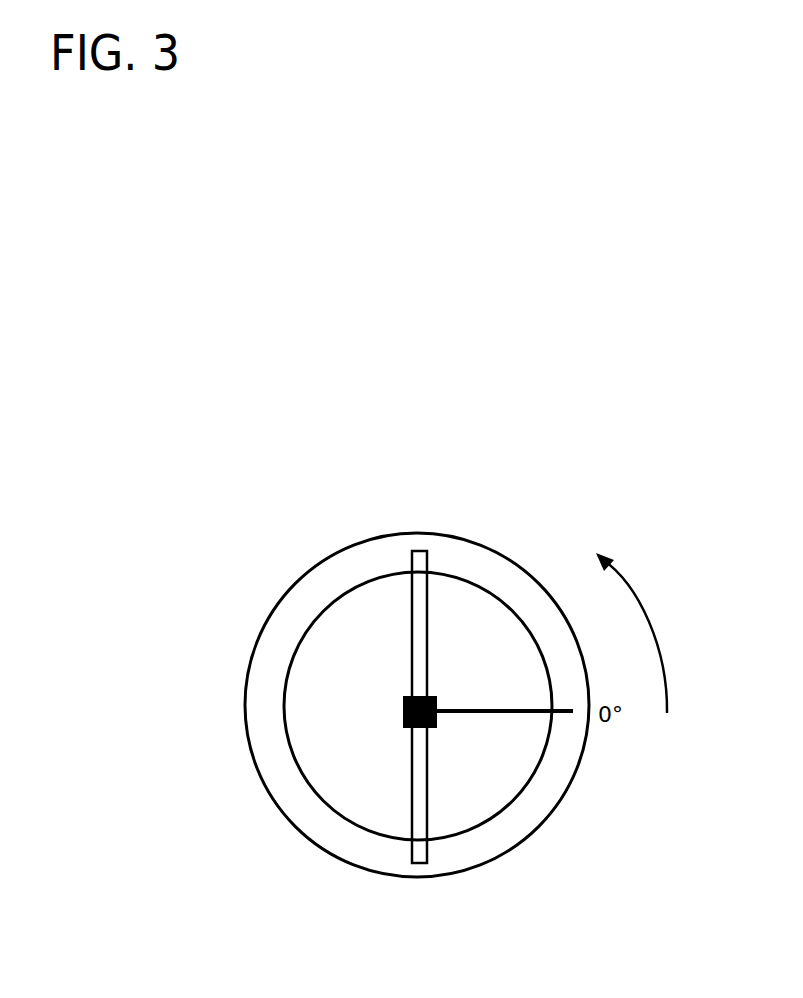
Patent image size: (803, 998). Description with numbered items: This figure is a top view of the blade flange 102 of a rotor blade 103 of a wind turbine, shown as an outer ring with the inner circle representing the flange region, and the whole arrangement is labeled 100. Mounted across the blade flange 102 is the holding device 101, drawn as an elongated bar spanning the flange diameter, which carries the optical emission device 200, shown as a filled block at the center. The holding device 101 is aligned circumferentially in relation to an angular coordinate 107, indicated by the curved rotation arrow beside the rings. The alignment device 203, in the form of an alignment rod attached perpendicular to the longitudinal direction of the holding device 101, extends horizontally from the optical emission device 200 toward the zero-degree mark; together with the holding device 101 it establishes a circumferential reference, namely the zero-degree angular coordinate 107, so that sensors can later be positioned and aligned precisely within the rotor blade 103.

The electrode arrangement 100 is at (217, 190).
The holding device 101 is at (418, 657).
The blade flange 102 is at (282, 628).
The rotor blade 103 is at (485, 547).
The angular coordinate 107 is at (655, 628).
The optical emission device 200 is at (403, 715).
The alignment device 203 is at (510, 713).